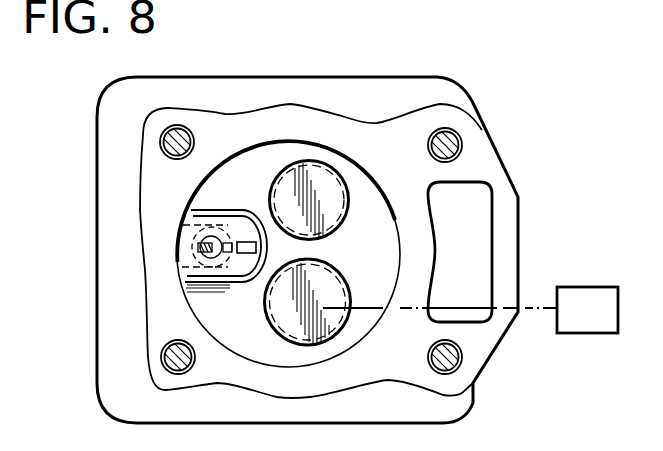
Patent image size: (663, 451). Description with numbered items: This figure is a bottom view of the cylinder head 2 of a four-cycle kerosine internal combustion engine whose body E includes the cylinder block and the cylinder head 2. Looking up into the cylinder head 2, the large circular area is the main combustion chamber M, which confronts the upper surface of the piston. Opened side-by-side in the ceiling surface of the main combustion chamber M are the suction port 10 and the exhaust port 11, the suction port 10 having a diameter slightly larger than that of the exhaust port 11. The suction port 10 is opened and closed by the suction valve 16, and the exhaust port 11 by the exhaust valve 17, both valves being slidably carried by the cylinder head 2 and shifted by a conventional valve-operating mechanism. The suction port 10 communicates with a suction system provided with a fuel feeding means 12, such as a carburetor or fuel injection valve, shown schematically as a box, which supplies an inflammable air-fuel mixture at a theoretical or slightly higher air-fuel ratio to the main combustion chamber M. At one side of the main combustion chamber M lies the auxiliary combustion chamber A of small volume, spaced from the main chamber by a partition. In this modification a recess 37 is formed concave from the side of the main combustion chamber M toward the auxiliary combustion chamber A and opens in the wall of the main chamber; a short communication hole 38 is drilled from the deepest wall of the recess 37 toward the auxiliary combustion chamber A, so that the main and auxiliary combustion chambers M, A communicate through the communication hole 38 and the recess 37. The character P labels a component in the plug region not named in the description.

The cylinder head 2 is at (483, 163).
The suction port 10 is at (282, 328).
The exhaust port 11 is at (335, 196).
The fuel feeding means 12 is at (603, 324).
The suction valve 16 is at (332, 293).
The exhaust valve 17 is at (327, 215).
The recess 37 is at (256, 247).
The communication hole 38 is at (233, 265).
The engine body E is at (467, 85).
The spark plug P is at (207, 230).
The auxiliary combustion chamber A is at (221, 236).
The main combustion chamber M is at (375, 272).